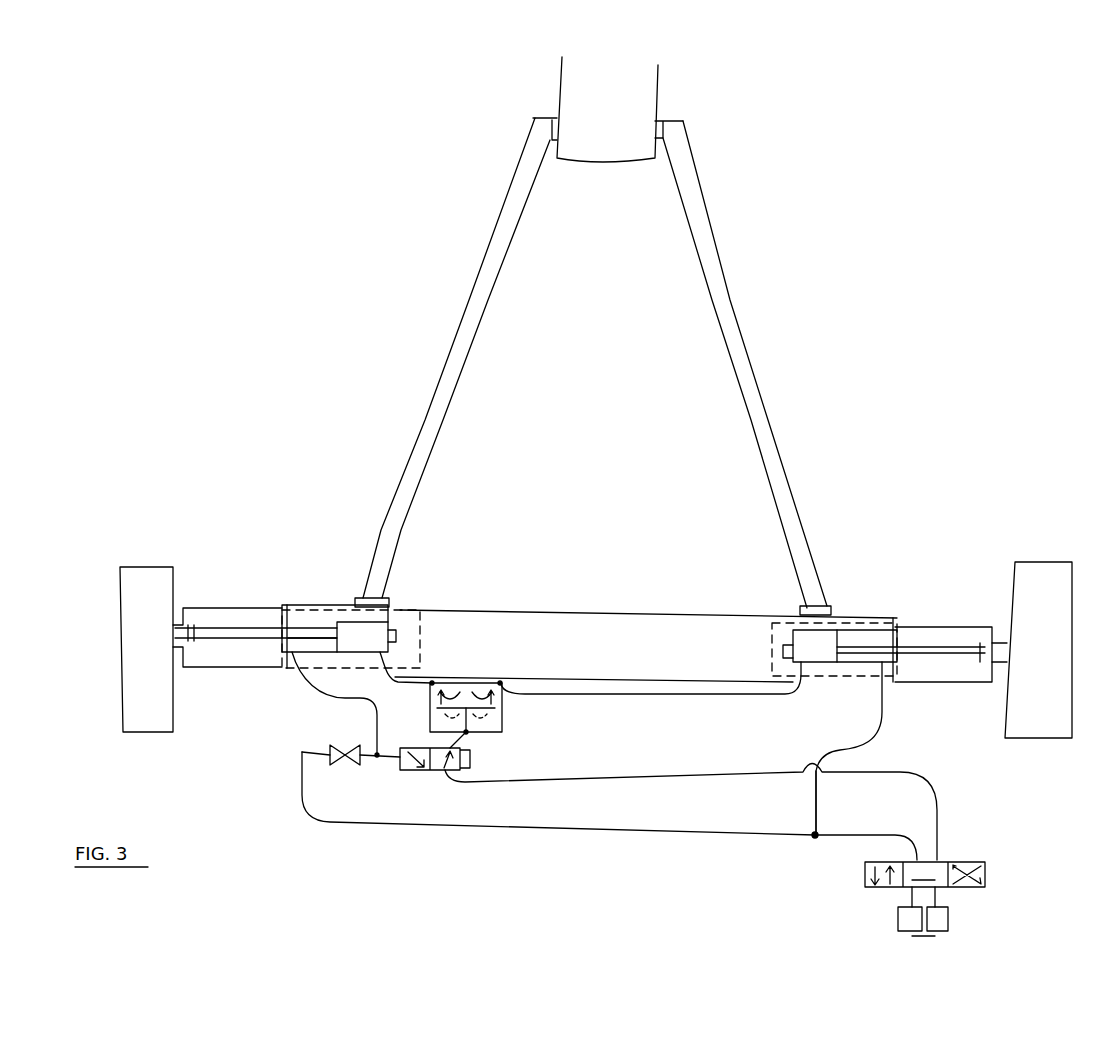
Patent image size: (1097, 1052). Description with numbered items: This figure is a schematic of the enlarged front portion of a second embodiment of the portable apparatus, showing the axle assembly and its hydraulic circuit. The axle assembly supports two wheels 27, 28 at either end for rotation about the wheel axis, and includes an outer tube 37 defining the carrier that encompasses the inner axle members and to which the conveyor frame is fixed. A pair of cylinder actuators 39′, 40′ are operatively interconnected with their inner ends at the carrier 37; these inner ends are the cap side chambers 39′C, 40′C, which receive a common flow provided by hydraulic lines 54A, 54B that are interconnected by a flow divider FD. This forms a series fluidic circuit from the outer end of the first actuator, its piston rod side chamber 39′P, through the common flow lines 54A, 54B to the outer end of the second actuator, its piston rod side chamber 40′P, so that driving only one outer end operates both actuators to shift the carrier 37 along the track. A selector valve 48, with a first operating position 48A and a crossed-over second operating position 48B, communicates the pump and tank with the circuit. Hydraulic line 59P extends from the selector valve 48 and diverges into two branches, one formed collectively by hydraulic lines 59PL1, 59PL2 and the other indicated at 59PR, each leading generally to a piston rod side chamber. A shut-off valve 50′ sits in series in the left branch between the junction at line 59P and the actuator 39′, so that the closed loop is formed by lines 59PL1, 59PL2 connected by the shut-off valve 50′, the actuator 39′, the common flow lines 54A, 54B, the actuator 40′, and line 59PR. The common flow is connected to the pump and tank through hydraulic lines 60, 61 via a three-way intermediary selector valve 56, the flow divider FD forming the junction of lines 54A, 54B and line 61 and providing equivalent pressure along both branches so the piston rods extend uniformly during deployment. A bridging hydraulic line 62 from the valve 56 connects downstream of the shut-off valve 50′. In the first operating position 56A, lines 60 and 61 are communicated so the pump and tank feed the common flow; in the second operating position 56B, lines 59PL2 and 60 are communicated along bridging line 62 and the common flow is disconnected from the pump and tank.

The wheel 27 is at (151, 562).
The wheel 28 is at (1036, 560).
The outer tube 37 is at (566, 610).
The cylinder actuator 39′ is at (345, 608).
The piston rod side chamber 39′P is at (308, 620).
The cap side chamber 39′C is at (372, 638).
The cylinder actuator 40′ is at (842, 618).
The piston rod side chamber 40′P is at (877, 637).
The cap side chamber 40′C is at (806, 615).
The hydraulic line 54A is at (397, 688).
The hydraulic line 54B is at (578, 698).
The flow divider FD is at (505, 722).
The hydraulic line 61 is at (470, 741).
The intermediary selector valve 56 is at (468, 761).
The first operating position 56A is at (441, 775).
The second operating position 56B is at (413, 772).
The shut-off valve 50′ is at (352, 752).
The bridging hydraulic line 62 is at (398, 758).
The hydraulic line 59PL1 is at (490, 830).
The hydraulic line 59PL2 is at (343, 697).
The hydraulic line 59PR is at (890, 726).
The hydraulic line 59P is at (838, 855).
The hydraulic line 60 is at (932, 790).
The selector valve 48 is at (997, 878).
The first operating position 48A is at (880, 890).
The second operating position 48B is at (965, 890).